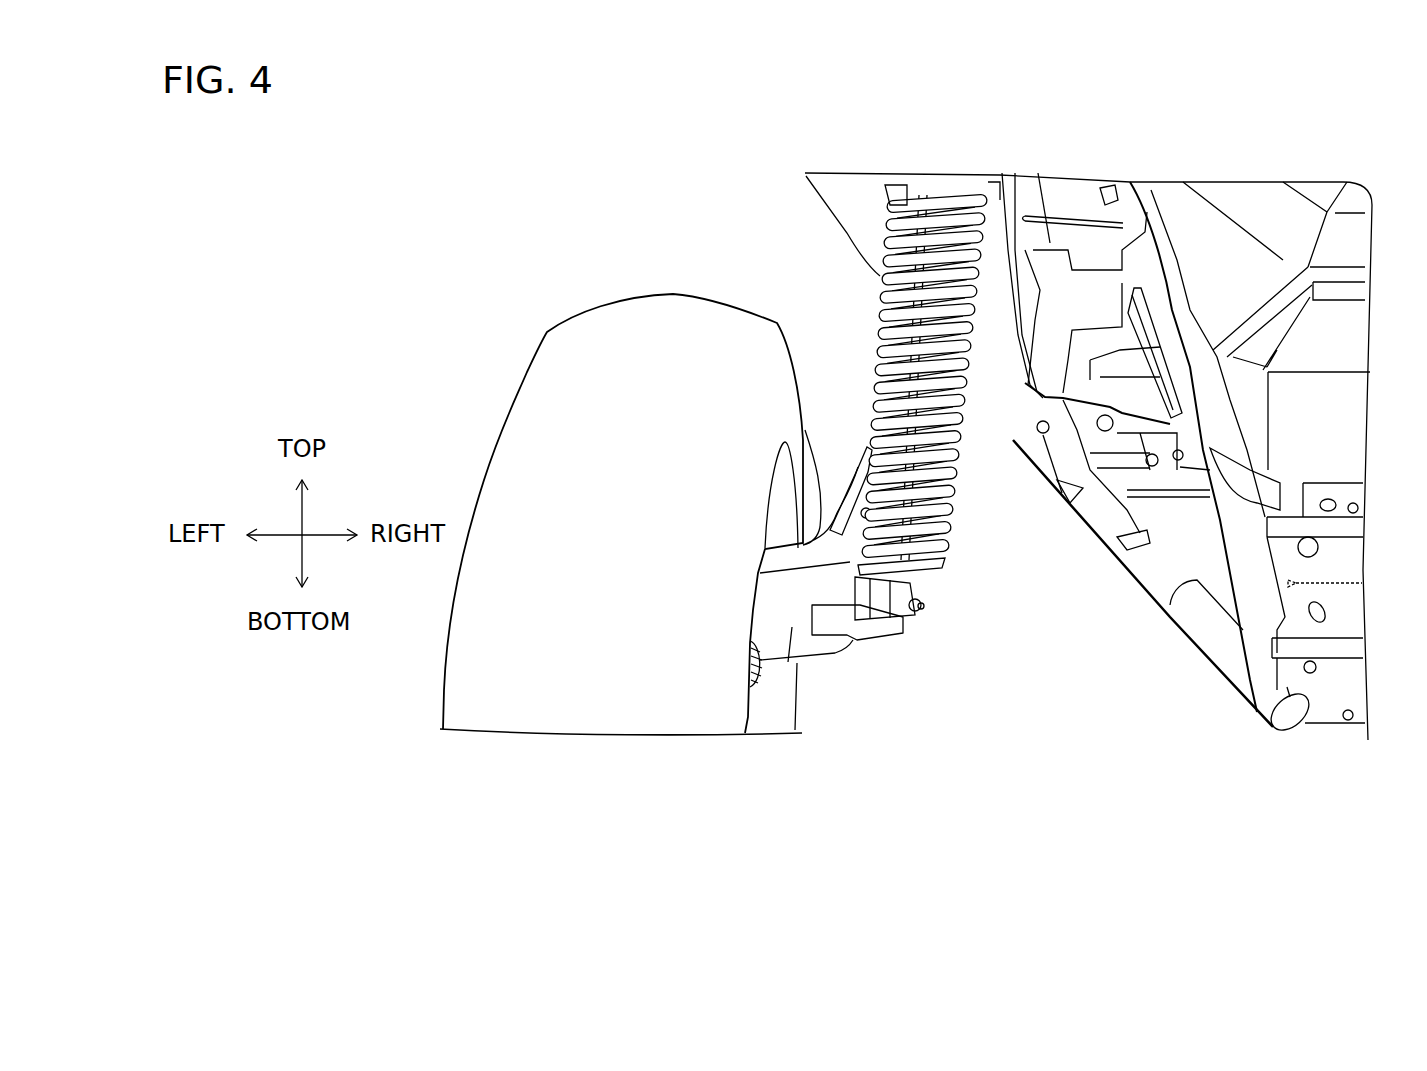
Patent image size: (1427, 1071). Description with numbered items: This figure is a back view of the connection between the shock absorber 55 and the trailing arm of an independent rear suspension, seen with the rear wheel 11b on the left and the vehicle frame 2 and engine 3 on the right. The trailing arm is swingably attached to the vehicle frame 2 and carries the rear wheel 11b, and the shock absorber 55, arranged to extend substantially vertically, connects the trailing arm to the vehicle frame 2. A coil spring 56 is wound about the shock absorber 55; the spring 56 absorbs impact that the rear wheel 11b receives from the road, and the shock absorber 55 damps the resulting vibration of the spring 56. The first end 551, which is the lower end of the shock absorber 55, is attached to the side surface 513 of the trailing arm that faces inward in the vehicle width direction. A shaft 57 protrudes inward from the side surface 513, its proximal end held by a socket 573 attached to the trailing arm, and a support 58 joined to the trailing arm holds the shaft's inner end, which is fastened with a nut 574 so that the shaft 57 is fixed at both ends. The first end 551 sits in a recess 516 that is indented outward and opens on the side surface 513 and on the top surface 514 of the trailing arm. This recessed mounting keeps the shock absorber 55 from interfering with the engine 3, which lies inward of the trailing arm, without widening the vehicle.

The vehicle frame 2 is at (1197, 637).
The engine 3 is at (1052, 267).
The rear wheel 11b is at (527, 372).
The shock absorber 55 is at (935, 190).
The spring 56 is at (887, 327).
The shaft 57 is at (920, 612).
The support 58 is at (832, 613).
The side surface 513 is at (788, 662).
The top surface 514 is at (801, 463).
The recess 516 is at (852, 490).
The first end 551 is at (932, 598).
The socket 573 is at (877, 627).
The nut 574 is at (925, 615).